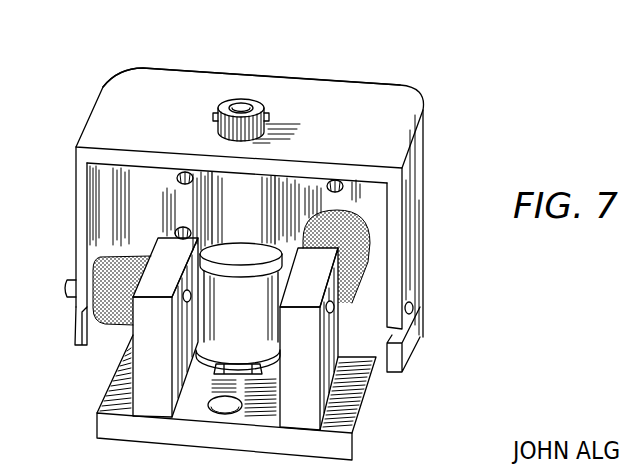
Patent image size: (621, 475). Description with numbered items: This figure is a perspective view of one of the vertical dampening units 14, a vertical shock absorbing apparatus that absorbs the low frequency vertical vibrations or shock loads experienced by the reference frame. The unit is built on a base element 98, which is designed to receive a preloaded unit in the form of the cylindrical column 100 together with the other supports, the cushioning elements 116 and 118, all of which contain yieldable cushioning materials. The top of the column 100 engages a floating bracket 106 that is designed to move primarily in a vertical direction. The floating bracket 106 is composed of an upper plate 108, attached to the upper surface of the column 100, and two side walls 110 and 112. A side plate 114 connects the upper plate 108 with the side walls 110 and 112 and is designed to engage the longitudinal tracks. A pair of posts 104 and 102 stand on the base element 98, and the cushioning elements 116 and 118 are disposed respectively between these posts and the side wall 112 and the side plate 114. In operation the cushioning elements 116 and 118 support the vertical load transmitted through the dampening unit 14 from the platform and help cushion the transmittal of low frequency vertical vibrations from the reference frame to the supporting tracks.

The vertical dampening unit 14 is at (492, 124).
The base element 98 is at (340, 450).
The cylindrical column 100 is at (260, 198).
The post 102 is at (312, 385).
The post 104 is at (145, 383).
The floating bracket 106 is at (384, 98).
The upper plate 108 is at (192, 73).
The side wall 110 is at (417, 212).
The side wall 112 is at (76, 195).
The side plate 114 is at (158, 183).
The cushioning element 116 is at (120, 325).
The cushioning element 118 is at (360, 262).